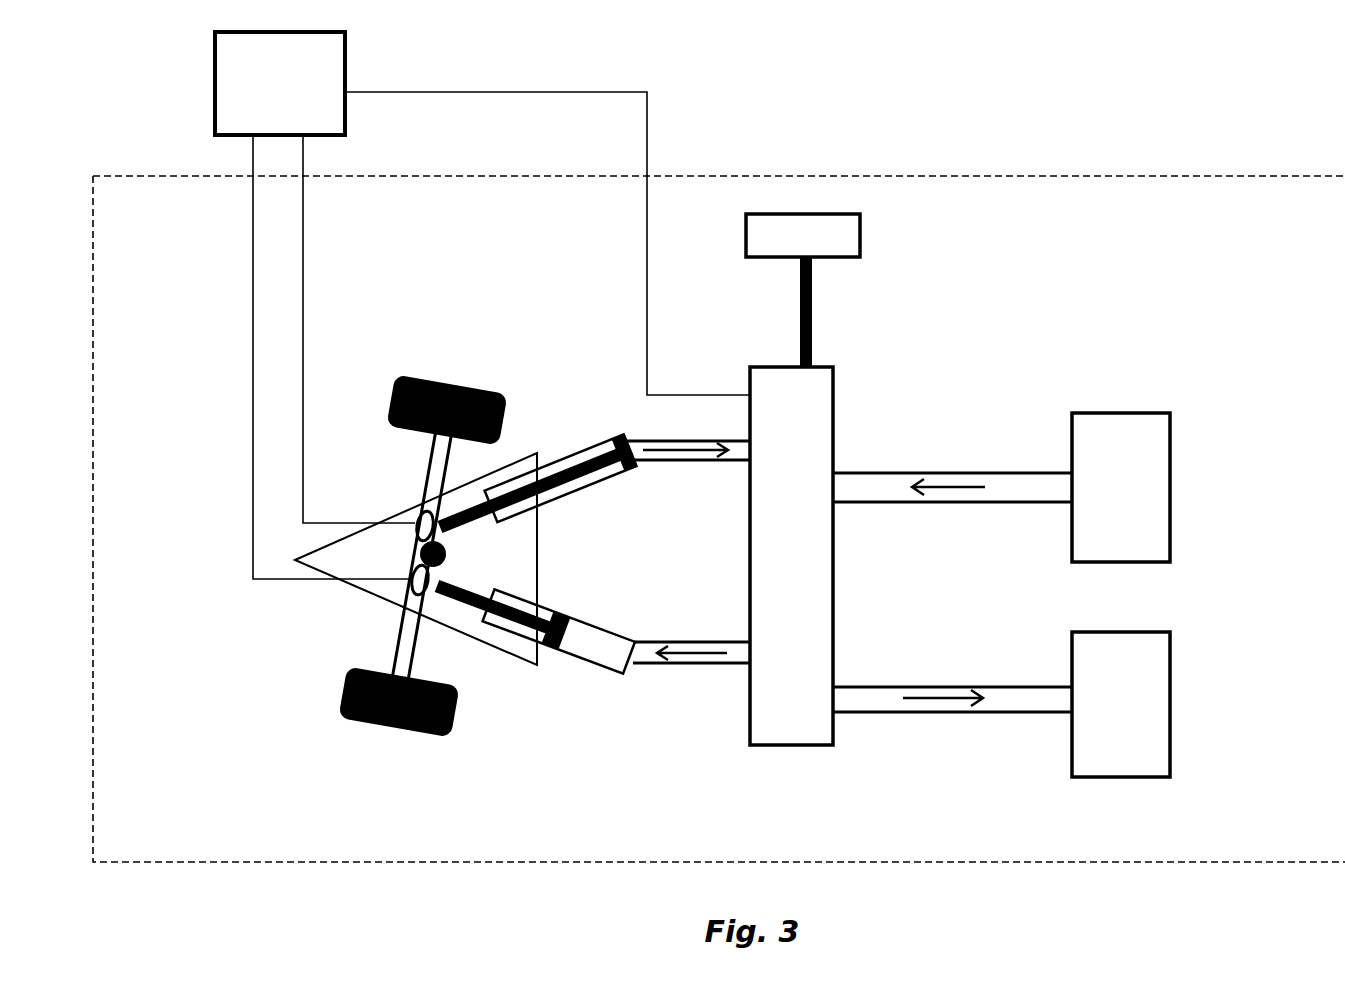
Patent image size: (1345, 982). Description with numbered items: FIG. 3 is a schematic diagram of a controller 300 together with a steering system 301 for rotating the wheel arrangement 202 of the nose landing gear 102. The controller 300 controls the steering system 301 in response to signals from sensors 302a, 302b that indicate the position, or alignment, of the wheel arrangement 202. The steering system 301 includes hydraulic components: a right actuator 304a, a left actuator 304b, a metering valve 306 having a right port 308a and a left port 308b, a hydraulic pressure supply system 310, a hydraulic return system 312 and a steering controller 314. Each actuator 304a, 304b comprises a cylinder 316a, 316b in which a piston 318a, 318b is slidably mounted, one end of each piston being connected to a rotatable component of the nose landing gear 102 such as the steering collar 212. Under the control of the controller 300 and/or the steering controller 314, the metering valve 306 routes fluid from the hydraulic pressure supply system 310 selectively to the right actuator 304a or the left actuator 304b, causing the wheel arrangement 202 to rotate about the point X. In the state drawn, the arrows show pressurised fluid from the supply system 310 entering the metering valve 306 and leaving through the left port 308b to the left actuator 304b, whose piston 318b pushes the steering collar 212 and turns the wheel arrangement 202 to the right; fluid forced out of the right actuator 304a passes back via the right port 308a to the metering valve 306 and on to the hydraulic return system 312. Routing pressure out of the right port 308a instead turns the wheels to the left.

The nose landing gear (NLG) 102 is at (322, 736).
The wheel arrangement 202 is at (455, 378).
The steering collar 212 is at (420, 548).
The controller 300 is at (482, 305).
The steering system 301 is at (1180, 176).
The sensor 302a is at (420, 523).
The sensor 302b is at (417, 580).
The point X is at (445, 555).
The right actuator 304a is at (549, 469).
The left actuator 304b is at (545, 654).
The metering valve 306 is at (837, 410).
The right port 308a is at (743, 460).
The left port 308b is at (750, 652).
The hydraulic pressure supply system 310 is at (1173, 412).
The hydraulic return system 312 is at (1173, 695).
The steering controller 314 is at (846, 240).
The cylinder 316a is at (625, 452).
The cylinder 316b is at (556, 630).
The first cylinder housing 318a is at (561, 478).
The second cylinder housing 318b is at (559, 631).